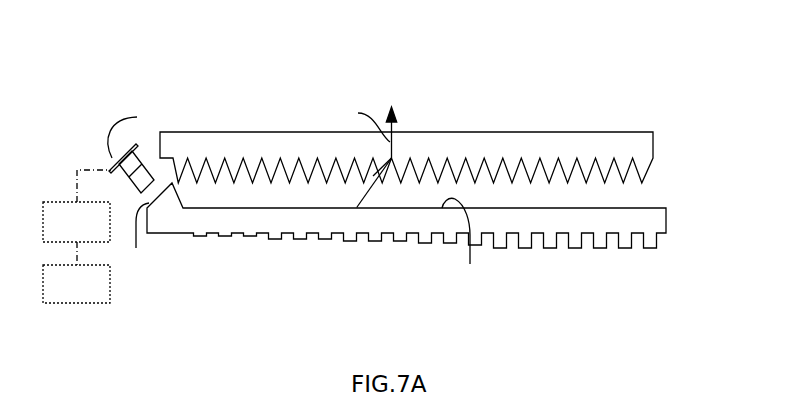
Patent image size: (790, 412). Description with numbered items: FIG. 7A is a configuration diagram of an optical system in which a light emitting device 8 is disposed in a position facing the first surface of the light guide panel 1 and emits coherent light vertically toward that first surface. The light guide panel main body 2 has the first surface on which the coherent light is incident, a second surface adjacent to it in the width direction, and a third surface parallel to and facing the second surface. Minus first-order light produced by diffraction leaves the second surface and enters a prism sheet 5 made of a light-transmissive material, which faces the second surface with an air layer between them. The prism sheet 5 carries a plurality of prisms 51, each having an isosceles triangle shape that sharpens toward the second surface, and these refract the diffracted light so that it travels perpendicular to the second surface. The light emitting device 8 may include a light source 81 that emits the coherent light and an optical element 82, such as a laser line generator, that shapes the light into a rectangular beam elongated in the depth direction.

The light guide panel 1 is at (124, 89).
The light guide panel main body 2 is at (613, 208).
The prism sheet 5 is at (235, 132).
The prism 51 is at (477, 167).
The light emitting device 8 is at (111, 162).
The light source 81 is at (90, 232).
The optical element 82 is at (90, 293).